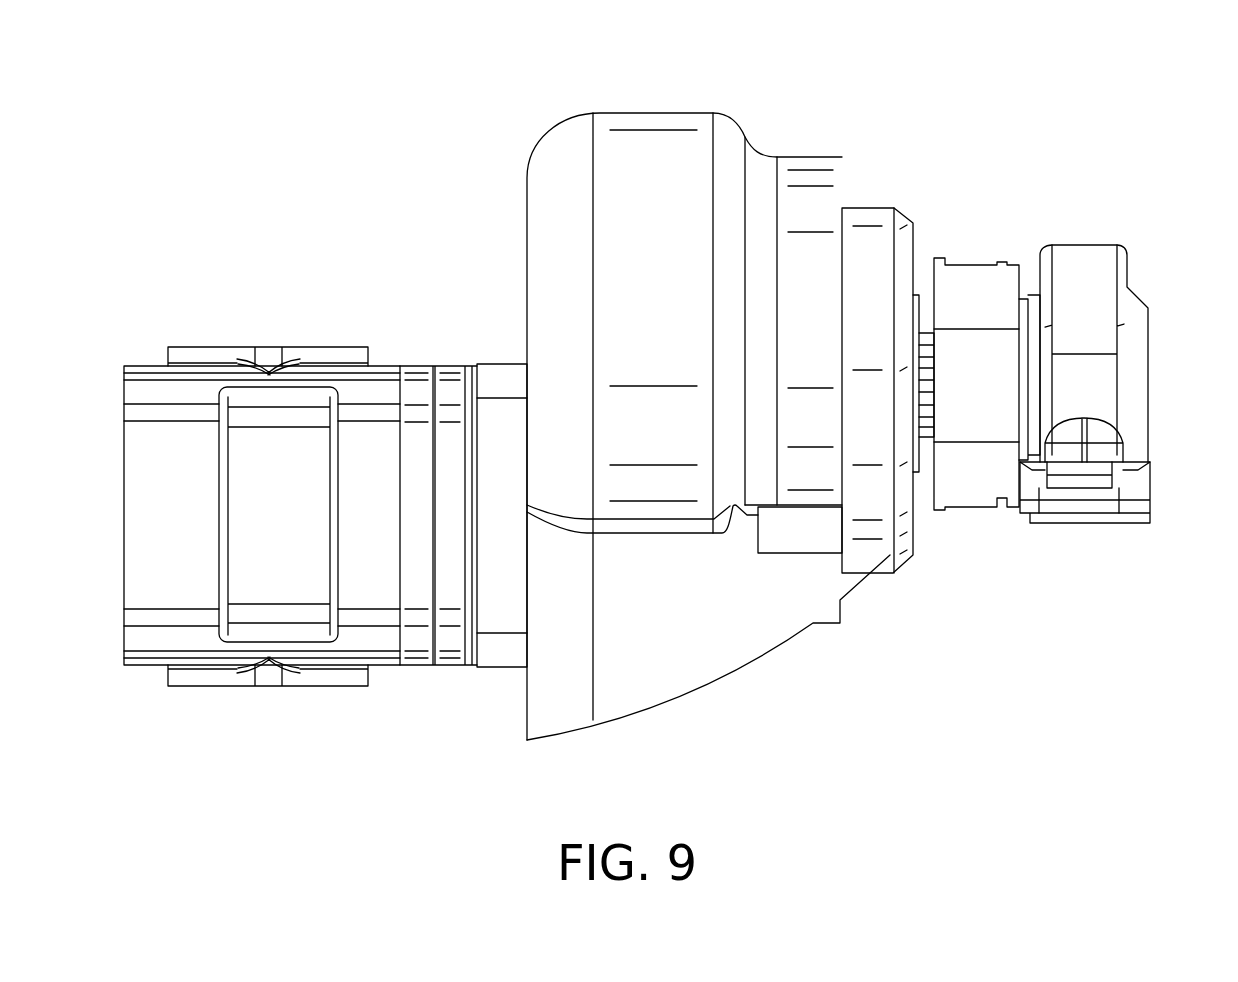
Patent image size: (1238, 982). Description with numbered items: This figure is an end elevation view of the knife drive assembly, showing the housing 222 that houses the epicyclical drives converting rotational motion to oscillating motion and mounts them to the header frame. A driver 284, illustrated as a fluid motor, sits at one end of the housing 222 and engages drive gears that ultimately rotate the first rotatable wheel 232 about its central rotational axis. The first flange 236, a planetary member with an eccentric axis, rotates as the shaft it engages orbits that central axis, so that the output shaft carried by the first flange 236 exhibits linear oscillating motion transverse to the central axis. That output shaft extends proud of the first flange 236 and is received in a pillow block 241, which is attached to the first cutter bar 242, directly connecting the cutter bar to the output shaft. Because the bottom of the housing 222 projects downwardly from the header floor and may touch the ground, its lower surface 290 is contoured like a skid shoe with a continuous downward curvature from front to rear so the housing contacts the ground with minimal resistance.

The housing 222 is at (632, 112).
The first rotatable wheel 232 is at (866, 208).
The first flange 236 is at (970, 264).
The pillow block 241 is at (1090, 245).
The first cutter bar 242 is at (1152, 513).
The driver 284 is at (136, 366).
The lower surface 290 is at (668, 698).